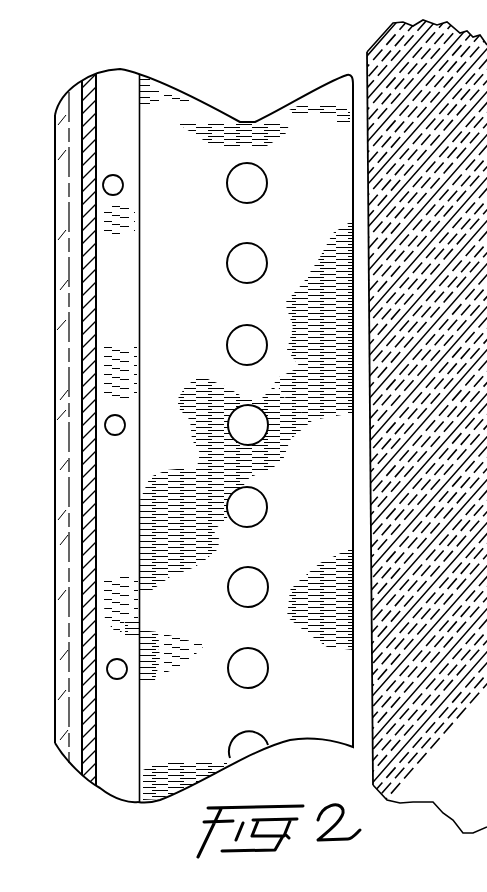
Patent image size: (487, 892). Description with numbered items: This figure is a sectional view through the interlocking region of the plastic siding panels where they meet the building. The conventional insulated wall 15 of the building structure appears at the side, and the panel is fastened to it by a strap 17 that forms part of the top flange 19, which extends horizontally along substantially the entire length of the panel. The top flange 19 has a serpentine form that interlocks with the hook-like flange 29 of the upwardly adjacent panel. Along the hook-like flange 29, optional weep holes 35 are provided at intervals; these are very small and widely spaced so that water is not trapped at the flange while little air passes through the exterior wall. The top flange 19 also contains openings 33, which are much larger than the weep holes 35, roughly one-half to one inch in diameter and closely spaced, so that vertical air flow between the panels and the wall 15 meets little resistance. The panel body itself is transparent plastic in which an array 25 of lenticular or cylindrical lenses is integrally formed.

The insulated wall 15 is at (362, 157).
The strap 17 is at (353, 650).
The top flange 19 is at (332, 516).
The array of lenses 25 is at (80, 620).
The hook-like flange 29 is at (100, 523).
The openings 33 is at (225, 517).
The weep holes 35 is at (125, 423).